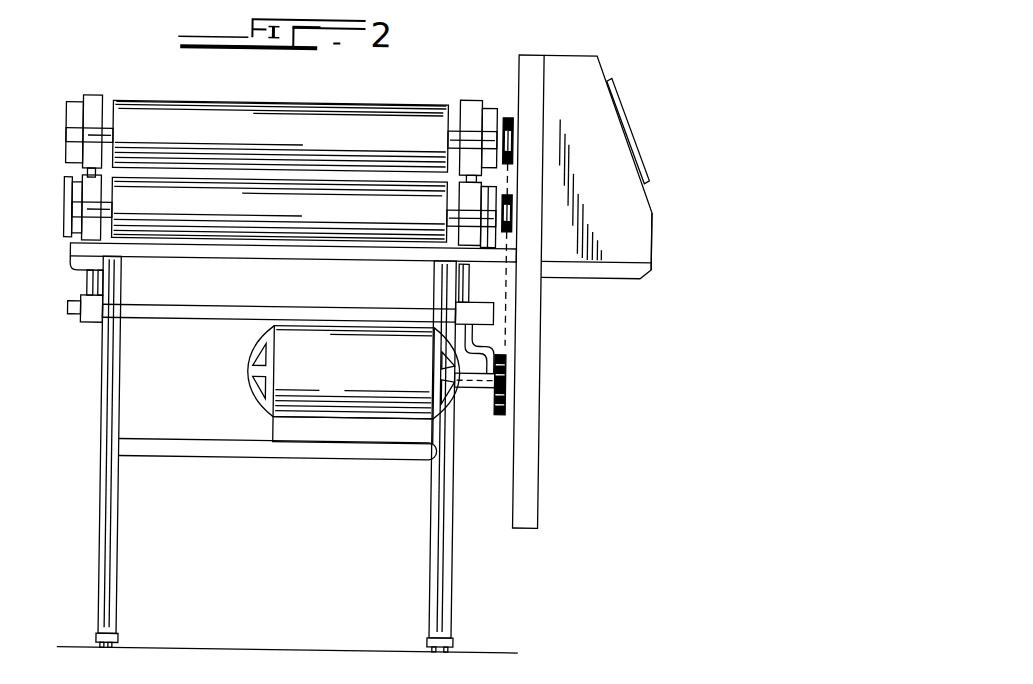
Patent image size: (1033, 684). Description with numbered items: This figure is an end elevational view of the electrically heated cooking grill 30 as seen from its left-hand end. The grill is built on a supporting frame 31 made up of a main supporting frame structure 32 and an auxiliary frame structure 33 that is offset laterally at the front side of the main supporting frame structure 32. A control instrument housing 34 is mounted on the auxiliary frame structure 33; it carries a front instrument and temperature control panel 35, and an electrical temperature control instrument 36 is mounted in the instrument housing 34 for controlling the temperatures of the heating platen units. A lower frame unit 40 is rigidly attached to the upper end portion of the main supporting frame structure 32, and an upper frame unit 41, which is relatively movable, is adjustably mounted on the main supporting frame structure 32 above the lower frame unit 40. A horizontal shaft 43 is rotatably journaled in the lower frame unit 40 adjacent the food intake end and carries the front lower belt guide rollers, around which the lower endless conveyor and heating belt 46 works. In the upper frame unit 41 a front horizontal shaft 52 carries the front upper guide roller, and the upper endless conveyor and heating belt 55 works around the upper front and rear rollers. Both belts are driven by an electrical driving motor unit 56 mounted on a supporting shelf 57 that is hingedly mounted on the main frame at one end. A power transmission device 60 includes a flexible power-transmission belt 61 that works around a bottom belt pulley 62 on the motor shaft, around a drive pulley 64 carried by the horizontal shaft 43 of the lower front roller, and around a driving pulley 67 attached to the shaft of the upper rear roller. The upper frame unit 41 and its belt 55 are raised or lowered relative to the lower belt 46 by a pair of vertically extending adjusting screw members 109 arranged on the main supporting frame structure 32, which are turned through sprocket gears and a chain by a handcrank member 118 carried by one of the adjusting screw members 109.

The electrically heated cooking grill 30 is at (387, 101).
The supporting frame 31 is at (448, 569).
The main supporting frame structure 32 is at (112, 551).
The auxiliary frame structure 33 is at (531, 459).
The control instrument housing 34 is at (584, 75).
The front instrument and temperature control panel 35 is at (652, 203).
The electrical temperature control instrument 36 is at (634, 128).
The lower frame unit 40 is at (105, 237).
The upper frame unit 41 is at (93, 95).
The horizontal shaft 43 is at (88, 209).
The lower endless conveyor and heating belt 46 is at (269, 230).
The front horizontal shaft 52 is at (88, 136).
The upper endless conveyor and heating belt 55 is at (320, 124).
The electrical driving motor unit 56 is at (286, 358).
The supporting shelf 57 is at (366, 442).
The power transmission device 60 is at (476, 391).
The flexible power-transmission belt 61 is at (508, 311).
The bottom belt pulley 62 is at (508, 383).
The drive pulley 64 is at (510, 211).
The driving pulley 67 is at (509, 135).
The adjusting screw member 109 is at (463, 288).
The handcrank member 118 is at (493, 350).